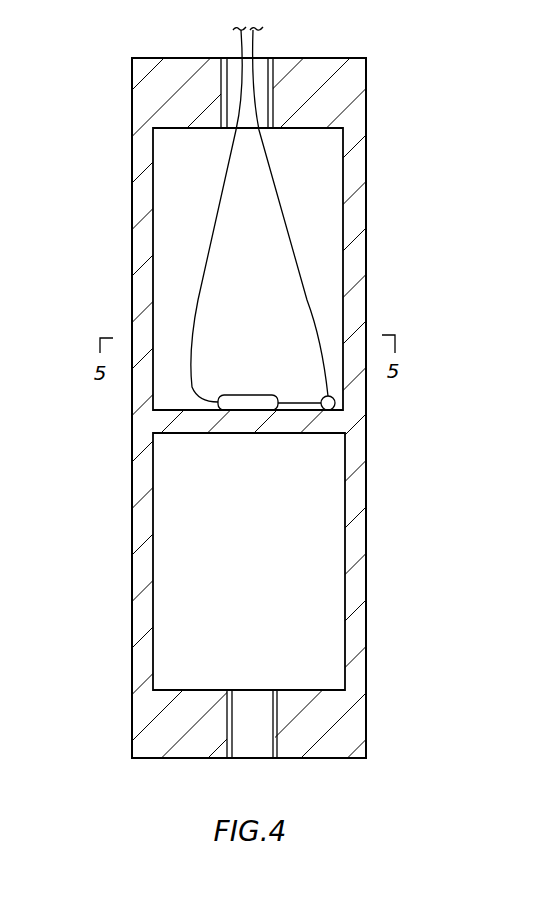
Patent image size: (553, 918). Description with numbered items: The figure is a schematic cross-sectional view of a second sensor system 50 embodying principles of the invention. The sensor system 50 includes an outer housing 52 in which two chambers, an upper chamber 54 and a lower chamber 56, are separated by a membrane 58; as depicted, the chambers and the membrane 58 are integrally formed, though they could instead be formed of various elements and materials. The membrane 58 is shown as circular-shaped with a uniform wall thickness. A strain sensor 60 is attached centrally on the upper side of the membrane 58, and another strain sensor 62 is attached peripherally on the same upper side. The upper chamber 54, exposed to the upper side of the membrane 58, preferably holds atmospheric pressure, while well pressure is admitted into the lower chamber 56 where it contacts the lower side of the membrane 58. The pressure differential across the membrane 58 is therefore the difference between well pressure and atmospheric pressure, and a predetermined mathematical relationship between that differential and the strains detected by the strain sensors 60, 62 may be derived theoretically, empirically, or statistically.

The sensor system 50 is at (276, 459).
The outer housing 52 is at (367, 573).
The upper chamber 54 is at (312, 207).
The lower chamber 56 is at (335, 645).
The membrane 58 is at (318, 433).
The strain sensor 60 is at (245, 395).
The strain sensor 62 is at (334, 401).